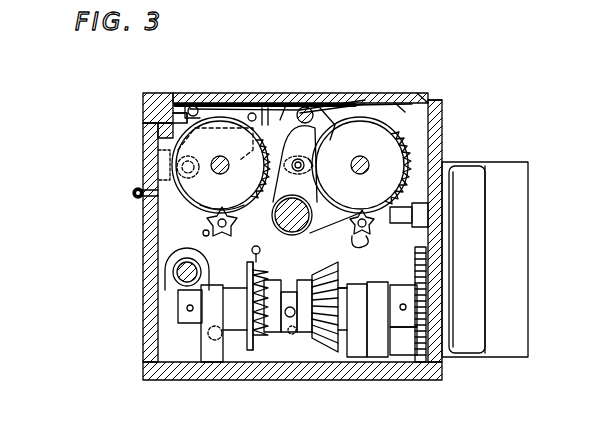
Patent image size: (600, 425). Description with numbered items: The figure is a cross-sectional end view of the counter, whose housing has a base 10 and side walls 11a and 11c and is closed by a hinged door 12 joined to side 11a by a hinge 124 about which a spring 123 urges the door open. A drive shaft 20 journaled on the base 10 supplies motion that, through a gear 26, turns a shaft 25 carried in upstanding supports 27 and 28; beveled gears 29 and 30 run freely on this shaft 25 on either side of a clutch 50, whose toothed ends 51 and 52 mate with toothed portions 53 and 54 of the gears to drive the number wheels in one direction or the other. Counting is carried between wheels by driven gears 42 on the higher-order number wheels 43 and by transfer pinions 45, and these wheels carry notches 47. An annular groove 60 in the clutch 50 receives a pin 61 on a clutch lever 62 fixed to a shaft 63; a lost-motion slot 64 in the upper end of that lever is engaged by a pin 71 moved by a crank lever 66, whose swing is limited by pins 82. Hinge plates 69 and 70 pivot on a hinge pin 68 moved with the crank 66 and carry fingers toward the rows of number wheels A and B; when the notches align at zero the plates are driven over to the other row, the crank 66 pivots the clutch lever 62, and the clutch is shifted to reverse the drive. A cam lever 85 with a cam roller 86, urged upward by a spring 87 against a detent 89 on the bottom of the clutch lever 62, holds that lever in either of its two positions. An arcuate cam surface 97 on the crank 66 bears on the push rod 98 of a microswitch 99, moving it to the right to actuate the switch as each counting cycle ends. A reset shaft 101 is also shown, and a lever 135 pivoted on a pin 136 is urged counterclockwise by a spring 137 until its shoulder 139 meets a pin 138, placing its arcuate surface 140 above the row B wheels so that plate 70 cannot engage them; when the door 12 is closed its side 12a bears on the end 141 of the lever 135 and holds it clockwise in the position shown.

The base 10 is at (152, 371).
The side wall 11a is at (144, 250).
The side wall 11c is at (440, 113).
The hinged door 12 is at (163, 98).
The side of the door 12a is at (160, 137).
The drive shaft 20 is at (175, 273).
The shaft 25 is at (178, 307).
The gear 26 is at (421, 278).
The upstanding support 27 is at (379, 352).
The upstanding support 28 is at (207, 333).
The beveled gear 29 is at (332, 343).
The beveled gear 30 is at (237, 362).
The driven gears 42 is at (406, 154).
The number wheels of higher order 43 is at (428, 100).
The transfer pinions 45 is at (358, 246).
The notches 47 is at (212, 116).
The clutch 50 is at (268, 300).
The end of the clutch 51 is at (307, 281).
The end of the clutch 52 is at (262, 312).
The toothed portion 53 is at (316, 278).
The toothed portion 54 is at (247, 277).
The annular groove 60 is at (279, 281).
The pin 61 is at (289, 335).
The clutch lever 62 is at (263, 238).
The shaft 63 is at (292, 205).
The slot 64 is at (298, 160).
The crank lever 66 is at (286, 105).
The hinge pin 68 is at (306, 108).
The hinge plate 69 is at (327, 108).
The hinge plate 70 is at (271, 107).
The pin 71 is at (313, 160).
The pins 82 is at (256, 106).
The cam lever 85 is at (233, 340).
The cam roller 86 is at (299, 340).
The spring 87 is at (247, 263).
The detent 89 is at (321, 337).
The arcuate cam surface 97 is at (416, 262).
The push rod 98 is at (412, 214).
The microswitch 99 is at (516, 168).
The reset shaft 101 is at (369, 171).
The spring 123 is at (134, 184).
The hinge 124 is at (133, 193).
The lever 135 is at (178, 122).
The pin 136 is at (170, 165).
The spring 137 is at (182, 113).
The pin 138 is at (186, 103).
The shoulder 139 is at (215, 159).
The arcuate surface 140 is at (237, 166).
The end of the lever 141 is at (170, 130).
The row of number wheels A is at (401, 107).
The row of number wheels B is at (205, 103).